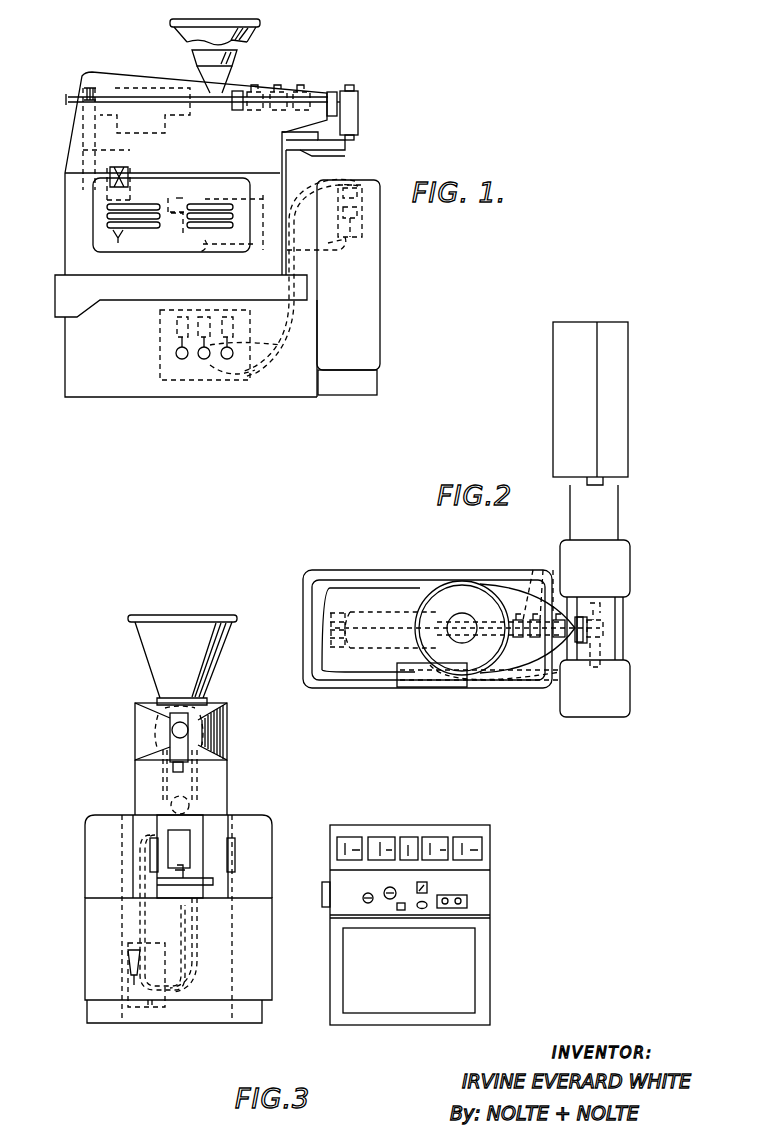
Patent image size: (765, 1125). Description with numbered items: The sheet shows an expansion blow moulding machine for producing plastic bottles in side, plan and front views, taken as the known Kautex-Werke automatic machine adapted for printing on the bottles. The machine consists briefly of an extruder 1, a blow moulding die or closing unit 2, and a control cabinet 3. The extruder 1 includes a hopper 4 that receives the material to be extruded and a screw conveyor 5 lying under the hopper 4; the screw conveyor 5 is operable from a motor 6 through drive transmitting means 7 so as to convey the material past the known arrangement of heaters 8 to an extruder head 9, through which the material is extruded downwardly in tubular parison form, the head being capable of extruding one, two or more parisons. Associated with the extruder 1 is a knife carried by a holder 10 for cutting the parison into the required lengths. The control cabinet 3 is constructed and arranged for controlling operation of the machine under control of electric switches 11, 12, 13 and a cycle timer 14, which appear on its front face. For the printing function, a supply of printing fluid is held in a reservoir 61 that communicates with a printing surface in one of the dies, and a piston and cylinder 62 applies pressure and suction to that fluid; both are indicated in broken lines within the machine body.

In FIG. 1, the extruder 1 is at (243, 72).
In FIG. 1, the blow moulding die or closing unit 2 is at (362, 187).
In FIG. 2, the blow moulding die or closing unit 2 is at (597, 717).
In FIG. 3, the blow moulding die or closing unit 2 is at (128, 808).
In FIG. 2, the control cabinet 3 is at (557, 408).
In FIG. 3, the control cabinet 3 is at (478, 898).
In FIG. 1, the hopper 4 is at (180, 30).
In FIG. 2, the hopper 4 is at (452, 583).
In FIG. 3, the hopper 4 is at (213, 669).
In FIG. 1, the screw conveyor 5 is at (207, 103).
In FIG. 1, the motor 6 is at (227, 200).
In FIG. 3, the motor 6 is at (215, 808).
In FIG. 1, the drive transmitting means 7 is at (136, 176).
In FIG. 2, the drive transmitting means 7 is at (348, 608).
In FIG. 3, the drive transmitting means 7 is at (160, 782).
In FIG. 1, the heaters 8 is at (253, 88).
In FIG. 2, the heaters 8 is at (538, 570).
In FIG. 1, the extruder head 9 is at (358, 98).
In FIG. 2, the extruder head 9 is at (512, 598).
In FIG. 3, the extruder head 9 is at (227, 760).
In FIG. 1, the knife holder 10 is at (340, 146).
In FIG. 3, the electric switch 11 is at (322, 883).
In FIG. 3, the electric switch 12 is at (365, 900).
In FIG. 3, the electric switch 13 is at (425, 910).
In FIG. 3, the cycle timer 14 is at (401, 910).
In FIG. 1, the reservoir 61 is at (168, 345).
In FIG. 3, the reservoir 61 is at (122, 958).
In FIG. 3, the piston and cylinder 62 is at (148, 1007).